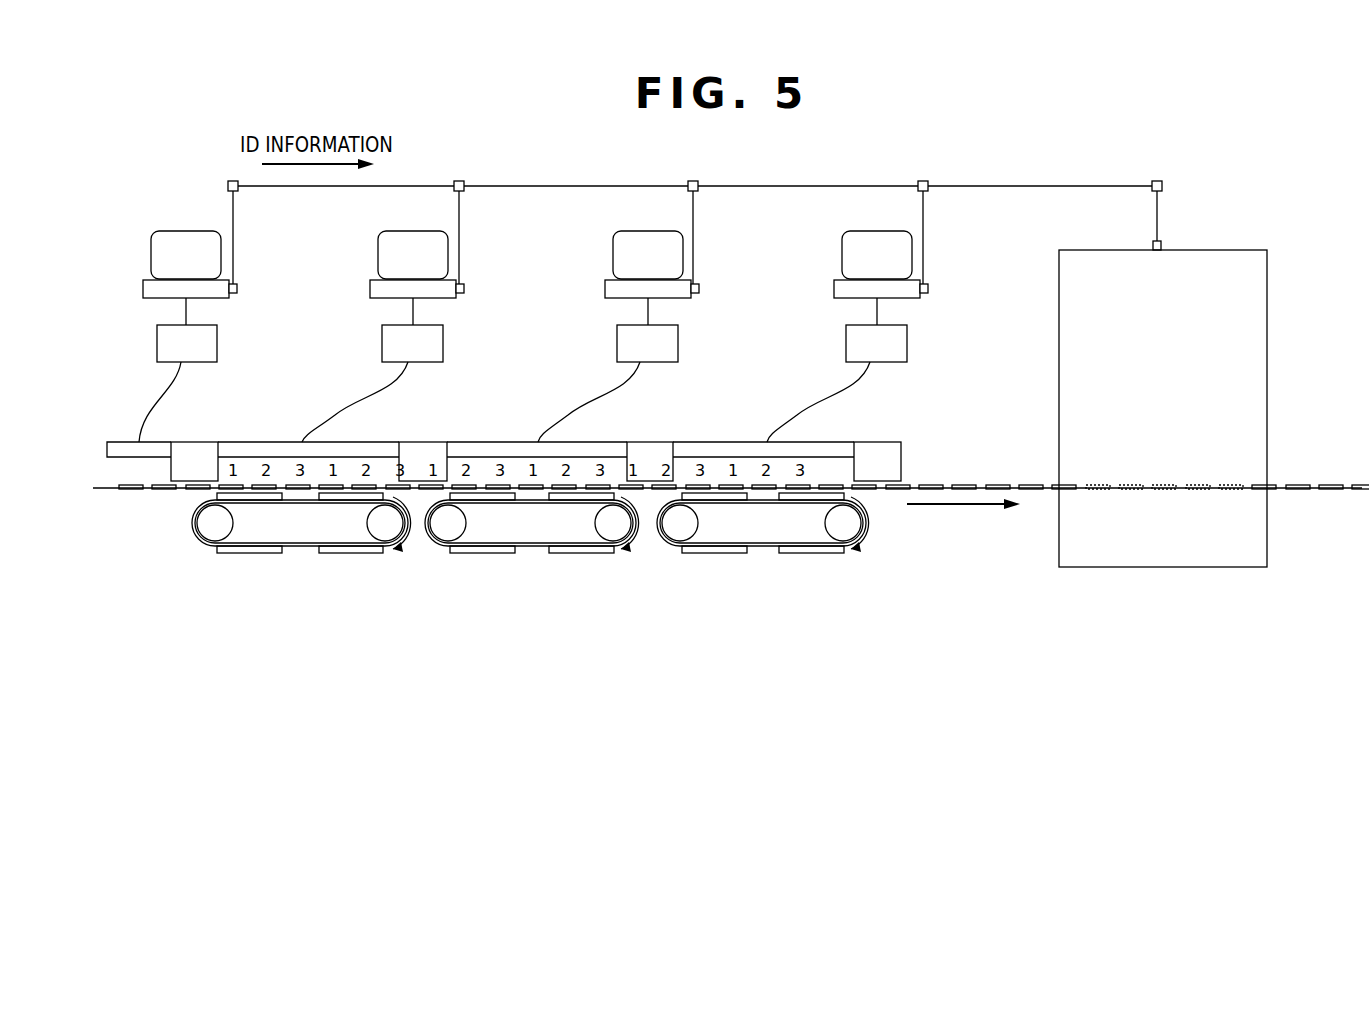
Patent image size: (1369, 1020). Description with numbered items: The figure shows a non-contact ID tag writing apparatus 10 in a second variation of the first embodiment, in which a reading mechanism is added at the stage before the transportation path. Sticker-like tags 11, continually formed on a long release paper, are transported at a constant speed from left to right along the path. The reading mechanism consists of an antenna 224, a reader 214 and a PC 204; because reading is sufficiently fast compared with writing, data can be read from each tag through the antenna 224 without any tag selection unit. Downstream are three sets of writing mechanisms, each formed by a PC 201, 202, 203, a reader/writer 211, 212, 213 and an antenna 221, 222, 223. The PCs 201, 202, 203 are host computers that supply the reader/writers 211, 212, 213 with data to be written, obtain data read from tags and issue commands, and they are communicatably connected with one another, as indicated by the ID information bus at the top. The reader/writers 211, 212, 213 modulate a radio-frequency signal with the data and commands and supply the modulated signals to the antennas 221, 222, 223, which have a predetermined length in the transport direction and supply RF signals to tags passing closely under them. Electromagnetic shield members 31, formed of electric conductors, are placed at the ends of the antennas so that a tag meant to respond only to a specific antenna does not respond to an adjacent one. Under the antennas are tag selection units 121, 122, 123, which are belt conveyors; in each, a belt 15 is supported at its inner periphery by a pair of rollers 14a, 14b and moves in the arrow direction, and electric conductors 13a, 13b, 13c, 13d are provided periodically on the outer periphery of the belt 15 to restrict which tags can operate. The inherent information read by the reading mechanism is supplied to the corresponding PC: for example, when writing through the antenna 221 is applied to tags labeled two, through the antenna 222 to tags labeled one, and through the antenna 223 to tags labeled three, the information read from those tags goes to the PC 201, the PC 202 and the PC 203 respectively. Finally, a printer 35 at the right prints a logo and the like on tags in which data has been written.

The non-contact ID tag writing apparatus 10 is at (907, 702).
The tag 11 is at (934, 482).
The tag selection unit 121 is at (294, 582).
The tag selection unit 122 is at (540, 585).
The tag selection unit 123 is at (768, 585).
The electric conductor 13a is at (345, 497).
The electric conductor 13b is at (197, 500).
The electric conductor 13c is at (242, 551).
The electric conductor 13d is at (342, 551).
The roller 14a is at (390, 527).
The roller 14b is at (212, 525).
The belt 15 is at (297, 547).
The electromagnetic shield member 31 is at (194, 450).
The printer 35 is at (1213, 250).
The PC 201 is at (378, 251).
The PC 202 is at (613, 251).
The PC 203 is at (842, 251).
The PC 204 is at (151, 251).
The reader/writer 211 is at (382, 343).
The reader/writer 212 is at (617, 343).
The reader/writer 213 is at (846, 343).
The reader 214 is at (157, 343).
The antenna 221 is at (266, 452).
The antenna 222 is at (501, 452).
The antenna 223 is at (725, 452).
The antenna 224 is at (115, 452).